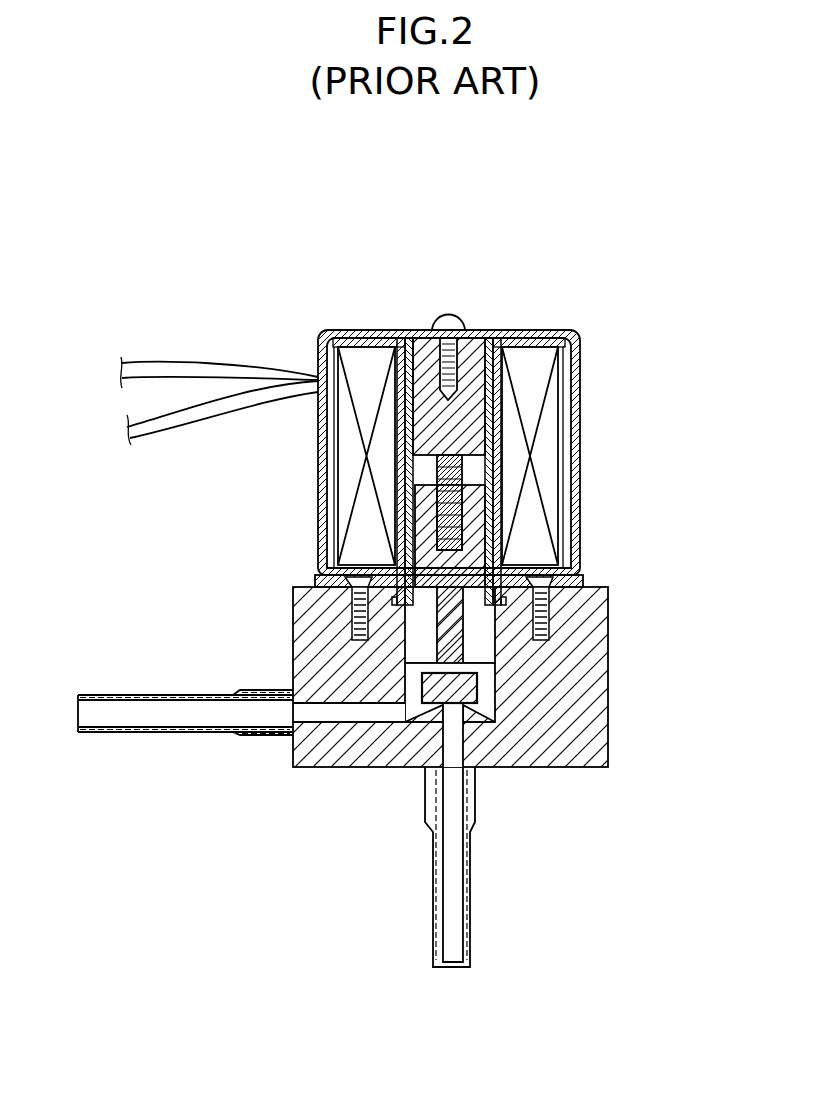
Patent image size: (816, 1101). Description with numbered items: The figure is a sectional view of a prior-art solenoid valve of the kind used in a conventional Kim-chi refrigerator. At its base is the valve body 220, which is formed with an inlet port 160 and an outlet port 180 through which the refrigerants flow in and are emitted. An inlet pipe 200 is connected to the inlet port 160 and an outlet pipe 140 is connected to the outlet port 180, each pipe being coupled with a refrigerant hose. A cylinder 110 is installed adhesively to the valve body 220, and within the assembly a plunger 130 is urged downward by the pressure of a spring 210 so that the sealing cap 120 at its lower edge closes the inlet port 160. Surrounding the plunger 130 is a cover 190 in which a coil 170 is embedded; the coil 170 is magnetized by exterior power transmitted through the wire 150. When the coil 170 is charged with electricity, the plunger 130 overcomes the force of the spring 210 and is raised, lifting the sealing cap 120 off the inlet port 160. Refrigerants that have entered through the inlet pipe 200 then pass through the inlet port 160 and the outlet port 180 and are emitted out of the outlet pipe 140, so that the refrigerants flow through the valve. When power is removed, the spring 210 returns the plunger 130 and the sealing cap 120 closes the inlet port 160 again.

The cylinder 110 is at (490, 332).
The sealing cap 120 is at (478, 692).
The plunger 130 is at (470, 572).
The outlet pipe 140 is at (457, 937).
The wire 150 is at (195, 366).
The inlet port 160 is at (352, 713).
The coil 170 is at (548, 443).
The outlet port 180 is at (450, 747).
The cover 190 is at (573, 362).
The inlet pipe 200 is at (132, 716).
The spring 210 is at (470, 512).
The valve body 220 is at (597, 722).